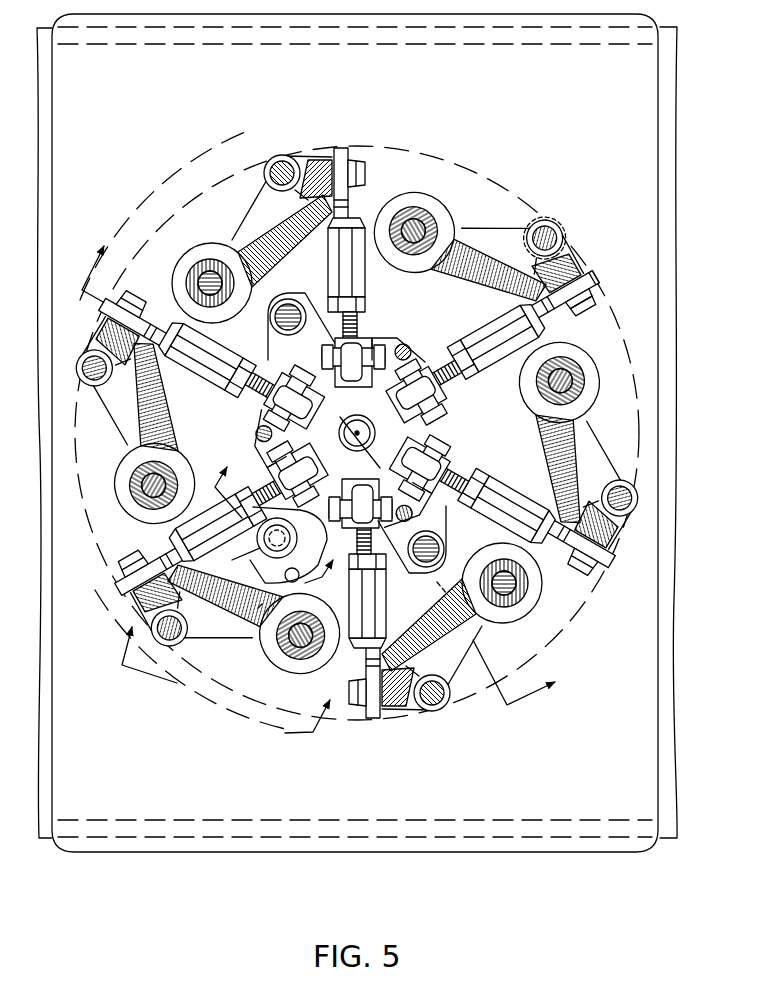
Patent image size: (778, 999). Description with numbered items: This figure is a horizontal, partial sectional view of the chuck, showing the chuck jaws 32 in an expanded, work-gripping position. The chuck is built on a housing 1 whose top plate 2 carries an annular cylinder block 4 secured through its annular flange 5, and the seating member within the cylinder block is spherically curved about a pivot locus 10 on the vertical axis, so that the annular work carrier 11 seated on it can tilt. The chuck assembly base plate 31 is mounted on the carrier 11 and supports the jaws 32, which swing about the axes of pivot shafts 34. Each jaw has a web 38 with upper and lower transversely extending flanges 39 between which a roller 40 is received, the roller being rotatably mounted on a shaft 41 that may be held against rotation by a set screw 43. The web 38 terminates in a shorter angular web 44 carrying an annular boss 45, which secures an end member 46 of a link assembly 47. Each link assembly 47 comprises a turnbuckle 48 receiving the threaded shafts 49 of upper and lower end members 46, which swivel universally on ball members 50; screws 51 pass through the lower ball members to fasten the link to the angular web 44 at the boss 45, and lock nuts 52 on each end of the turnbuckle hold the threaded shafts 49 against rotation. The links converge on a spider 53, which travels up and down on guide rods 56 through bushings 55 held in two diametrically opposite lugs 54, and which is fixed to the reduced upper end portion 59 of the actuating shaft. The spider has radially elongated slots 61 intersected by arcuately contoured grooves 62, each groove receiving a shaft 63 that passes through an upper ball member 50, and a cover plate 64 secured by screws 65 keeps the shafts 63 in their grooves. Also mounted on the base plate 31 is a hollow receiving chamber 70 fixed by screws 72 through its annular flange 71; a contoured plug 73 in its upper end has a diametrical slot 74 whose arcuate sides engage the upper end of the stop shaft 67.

The housing 1 is at (618, 27).
The top plate 2 is at (678, 56).
The annular cylinder block 4 is at (244, 171).
The annular flange 5 is at (233, 236).
The pivot locus 10 is at (271, 530).
The annular work carrier 11 is at (213, 693).
The chuck assembly base plate 31 is at (550, 791).
The chuck jaws 32 is at (452, 192).
The pivot shafts 34 is at (433, 209).
The web 38 is at (470, 274).
The transversely extending flanges 39 is at (503, 228).
The roller 40 is at (588, 262).
The shaft 41 is at (560, 240).
The set screw 43 is at (556, 217).
The angular web 44 is at (520, 283).
The annular boss 45 is at (603, 280).
The end member 46 is at (605, 291).
The link assembly 47 is at (600, 297).
The turnbuckle 48 is at (503, 371).
The threaded shafts 49 is at (452, 363).
The ball members 50 is at (560, 318).
The screws 51 is at (598, 313).
The lock nuts 52 is at (512, 308).
The spider 53 is at (455, 432).
The lugs 54 is at (421, 565).
The bushings 55 is at (442, 540).
The guide rods 56 is at (433, 587).
The upper end portion 59 is at (376, 402).
The slots 61 is at (447, 397).
The arcuately contoured grooves 62 is at (380, 438).
The shaft 63 is at (455, 455).
The cover plate 64 is at (350, 471).
The screws 65 is at (416, 318).
The stop shaft 67 is at (285, 577).
The receiving chamber 70 is at (240, 560).
The annular flange 71 is at (258, 608).
The screws 72 is at (252, 547).
The contoured plug 73 is at (262, 556).
The slot 74 is at (296, 542).